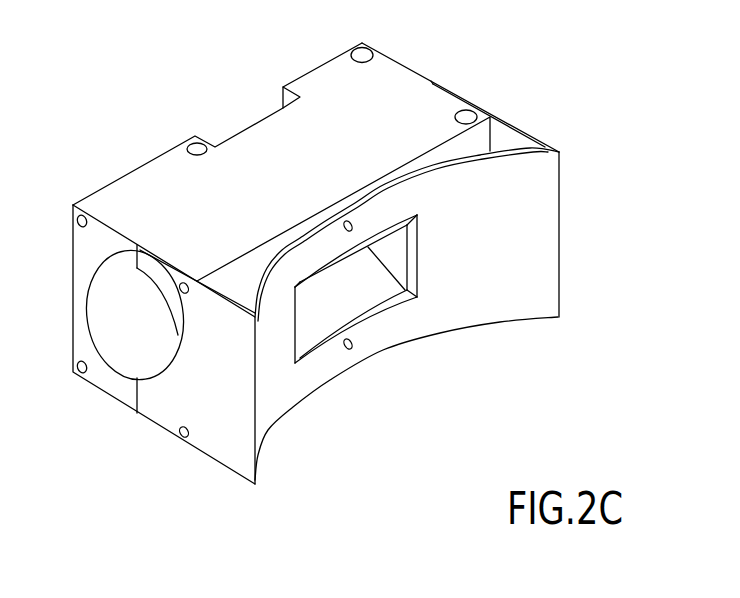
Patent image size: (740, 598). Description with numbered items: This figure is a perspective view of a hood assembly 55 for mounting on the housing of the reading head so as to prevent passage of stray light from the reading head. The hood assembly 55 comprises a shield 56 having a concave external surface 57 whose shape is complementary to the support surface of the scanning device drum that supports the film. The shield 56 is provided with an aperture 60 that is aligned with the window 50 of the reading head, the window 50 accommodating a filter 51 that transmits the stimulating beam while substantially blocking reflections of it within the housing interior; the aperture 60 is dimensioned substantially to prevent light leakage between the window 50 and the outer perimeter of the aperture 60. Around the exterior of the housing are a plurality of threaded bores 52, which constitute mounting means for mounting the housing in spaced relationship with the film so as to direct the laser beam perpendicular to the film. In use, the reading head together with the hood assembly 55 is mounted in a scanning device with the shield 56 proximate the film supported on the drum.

The window 50 is at (393, 250).
The filter 51 is at (348, 290).
The threaded bores 52 is at (360, 52).
The hood assembly 55 is at (538, 140).
The shield 56 is at (563, 261).
The concave external surface 57 is at (522, 298).
The aperture 60 is at (410, 295).